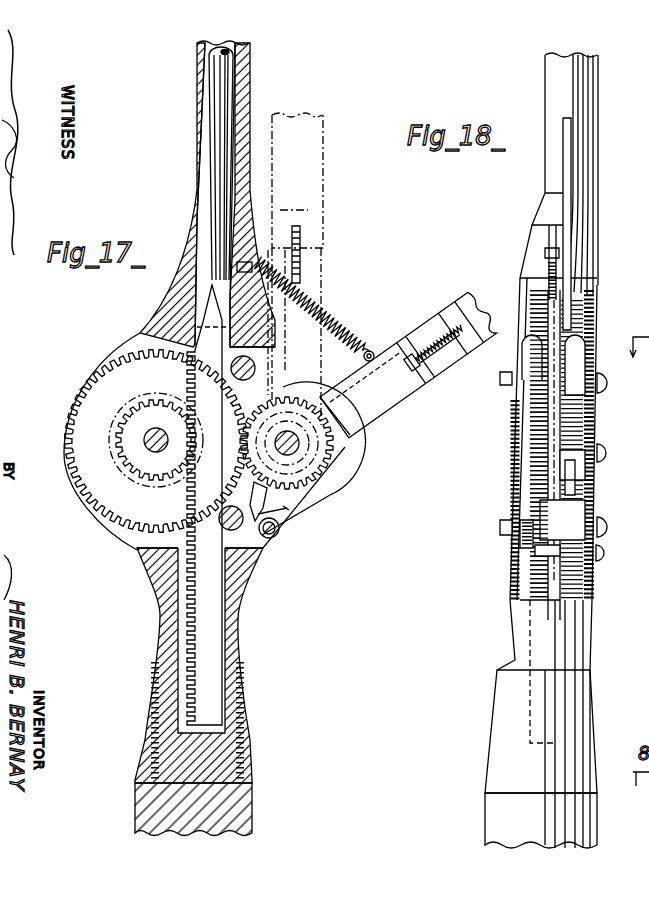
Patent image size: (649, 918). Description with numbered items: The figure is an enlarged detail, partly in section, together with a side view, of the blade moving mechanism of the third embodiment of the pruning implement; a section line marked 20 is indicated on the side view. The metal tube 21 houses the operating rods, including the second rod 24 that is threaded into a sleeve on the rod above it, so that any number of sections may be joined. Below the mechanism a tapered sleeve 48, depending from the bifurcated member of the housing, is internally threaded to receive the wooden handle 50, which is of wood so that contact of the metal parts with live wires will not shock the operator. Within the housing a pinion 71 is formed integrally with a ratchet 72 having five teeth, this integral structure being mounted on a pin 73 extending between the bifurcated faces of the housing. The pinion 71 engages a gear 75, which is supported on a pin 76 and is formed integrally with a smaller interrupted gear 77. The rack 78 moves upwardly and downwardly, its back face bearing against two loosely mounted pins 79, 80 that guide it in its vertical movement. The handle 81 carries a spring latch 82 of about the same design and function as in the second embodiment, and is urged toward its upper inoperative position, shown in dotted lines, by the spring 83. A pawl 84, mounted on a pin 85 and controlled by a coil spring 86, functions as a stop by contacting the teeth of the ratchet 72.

In FIG. 18, the section line indicator 20 is at (635, 360).
In FIG. 17, the metal tube 21 is at (250, 73).
In FIG. 17, the second rod 24 is at (220, 104).
In FIG. 17, the tapered sleeve 48 is at (245, 708).
In FIG. 18, the tapered sleeve 48 is at (585, 720).
In FIG. 17, the wooden handle 50 is at (255, 812).
In FIG. 18, the wooden handle 50 is at (585, 832).
In FIG. 17, the pinion 71 is at (318, 470).
In FIG. 18, the pinion 71 is at (578, 490).
In FIG. 17, the ratchet 72 is at (310, 488).
In FIG. 18, the ratchet 72 is at (533, 432).
In FIG. 17, the pin 73 is at (299, 443).
In FIG. 18, the pin 73 is at (603, 455).
In FIG. 17, the gear 75 is at (90, 480).
In FIG. 17, the pin 76 is at (154, 452).
In FIG. 17, the interrupted gear 77 is at (124, 430).
In FIG. 17, the rack 78 is at (205, 622).
In FIG. 17, the pin 79 is at (255, 368).
In FIG. 18, the pin 79 is at (603, 387).
In FIG. 17, the pin 80 is at (241, 526).
In FIG. 18, the pin 80 is at (604, 530).
In FIG. 17, the handle 81 is at (320, 186).
In FIG. 18, the handle 81 is at (572, 178).
In FIG. 17, the spring latch 82 is at (408, 400).
In FIG. 17, the spring 83 is at (322, 308).
In FIG. 17, the pawl 84 is at (262, 495).
In FIG. 18, the pawl 84 is at (540, 550).
In FIG. 17, the pin 85 is at (276, 534).
In FIG. 18, the pin 85 is at (600, 552).
In FIG. 17, the coil spring 86 is at (280, 520).
In FIG. 18, the coil spring 86 is at (520, 548).